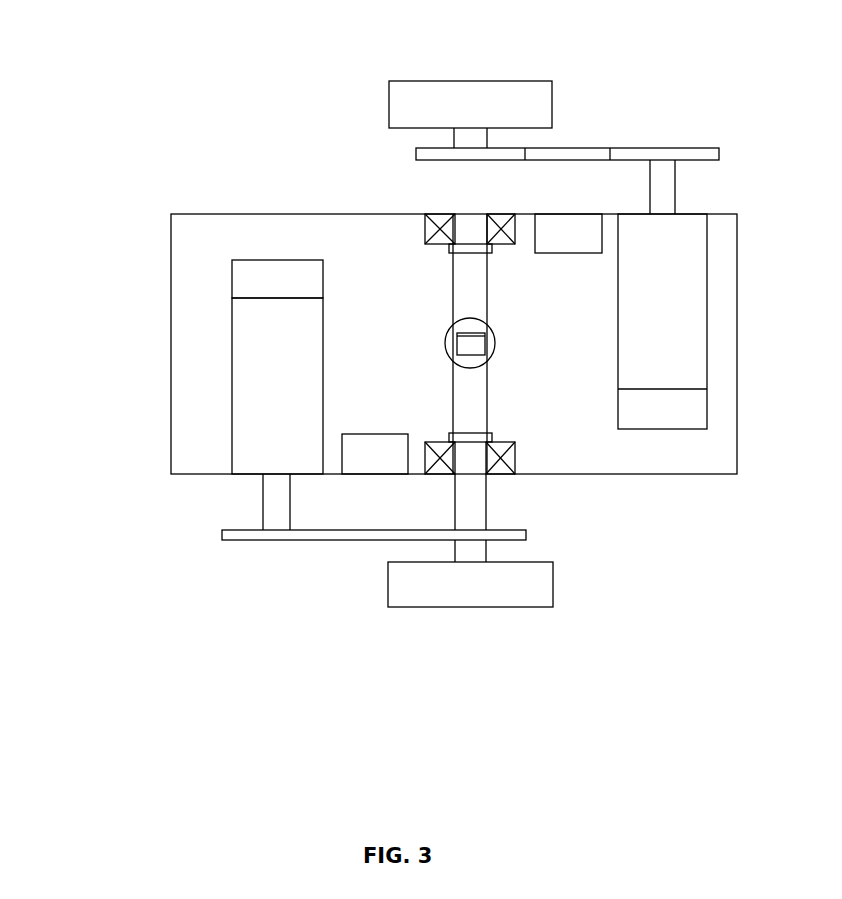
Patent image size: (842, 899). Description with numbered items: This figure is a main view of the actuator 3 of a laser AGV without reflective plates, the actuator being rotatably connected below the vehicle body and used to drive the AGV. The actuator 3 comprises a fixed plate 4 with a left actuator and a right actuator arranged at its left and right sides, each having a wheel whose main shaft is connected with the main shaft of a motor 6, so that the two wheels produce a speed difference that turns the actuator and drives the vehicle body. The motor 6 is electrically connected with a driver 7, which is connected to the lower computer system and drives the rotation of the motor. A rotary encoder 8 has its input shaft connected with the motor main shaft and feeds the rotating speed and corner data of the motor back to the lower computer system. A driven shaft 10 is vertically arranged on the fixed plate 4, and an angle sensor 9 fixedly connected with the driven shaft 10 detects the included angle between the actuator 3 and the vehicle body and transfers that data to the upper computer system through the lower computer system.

The actuator 3 is at (404, 242).
The fixed plate 4 is at (470, 344).
The motor 6 is at (270, 412).
The driver 7 is at (330, 520).
The rotary encoder 8 is at (256, 198).
The angle sensor 9 is at (549, 455).
The driven shaft 10 is at (488, 342).